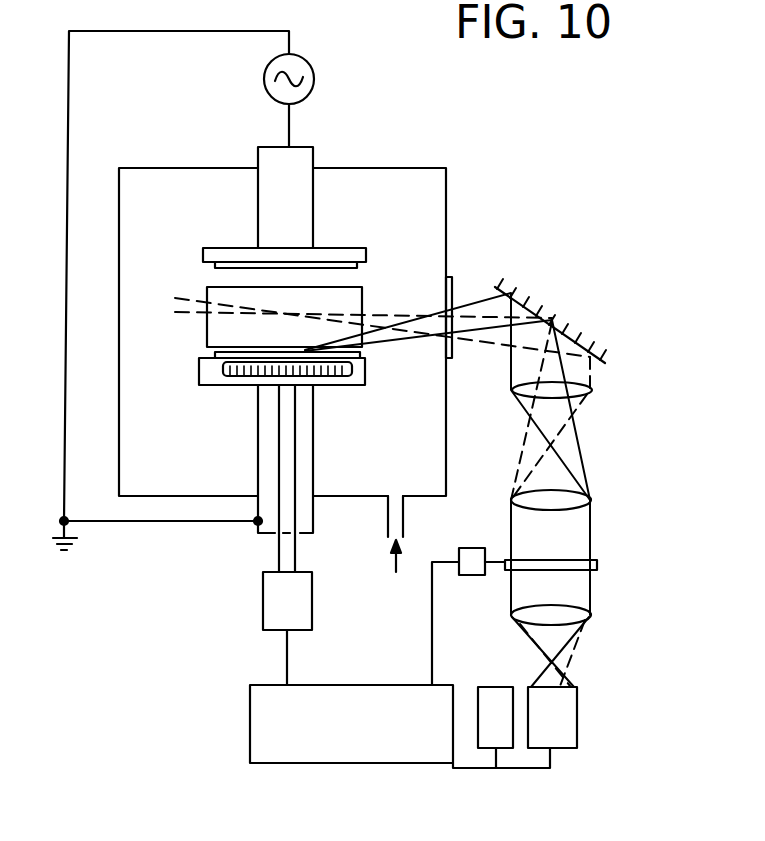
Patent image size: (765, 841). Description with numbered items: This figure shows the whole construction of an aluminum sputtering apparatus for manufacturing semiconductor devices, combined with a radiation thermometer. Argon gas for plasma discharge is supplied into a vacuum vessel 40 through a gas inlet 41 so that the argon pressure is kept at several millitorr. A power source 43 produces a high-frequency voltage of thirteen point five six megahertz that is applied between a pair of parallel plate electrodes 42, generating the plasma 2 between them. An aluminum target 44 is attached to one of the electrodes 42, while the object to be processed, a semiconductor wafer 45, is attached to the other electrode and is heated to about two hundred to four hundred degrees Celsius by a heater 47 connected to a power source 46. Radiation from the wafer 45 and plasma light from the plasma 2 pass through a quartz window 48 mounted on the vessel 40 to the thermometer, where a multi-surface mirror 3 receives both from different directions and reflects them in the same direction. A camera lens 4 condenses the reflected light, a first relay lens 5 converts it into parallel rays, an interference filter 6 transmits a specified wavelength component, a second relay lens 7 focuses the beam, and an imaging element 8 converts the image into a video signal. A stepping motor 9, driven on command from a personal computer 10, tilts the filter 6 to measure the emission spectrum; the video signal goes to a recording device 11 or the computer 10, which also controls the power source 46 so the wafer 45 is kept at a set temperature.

The plasma 2 is at (205, 335).
The multi-surface mirror 3 is at (558, 316).
The camera lens 4 is at (593, 388).
The first relay lens 5 is at (592, 500).
The interference filter 6 is at (597, 565).
The second relay lens 7 is at (592, 612).
The imaging element 8 is at (577, 712).
The stepping motor 9 is at (473, 578).
The personal computer 10 is at (377, 685).
The recording device 11 is at (496, 684).
The vacuum vessel 40 is at (430, 497).
The gas inlet 41 is at (388, 528).
The parallel plate electrodes 42 is at (313, 197).
The power source 43 is at (315, 76).
The aluminum target 44 is at (352, 273).
The semiconductor wafer 45 is at (365, 357).
The power source 46 is at (263, 609).
The heater 47 is at (367, 377).
The quartz window 48 is at (452, 280).